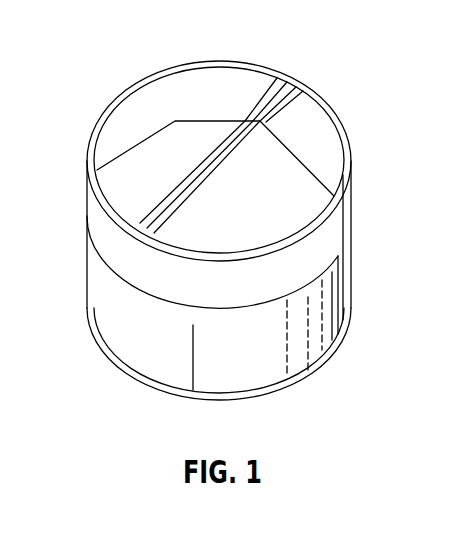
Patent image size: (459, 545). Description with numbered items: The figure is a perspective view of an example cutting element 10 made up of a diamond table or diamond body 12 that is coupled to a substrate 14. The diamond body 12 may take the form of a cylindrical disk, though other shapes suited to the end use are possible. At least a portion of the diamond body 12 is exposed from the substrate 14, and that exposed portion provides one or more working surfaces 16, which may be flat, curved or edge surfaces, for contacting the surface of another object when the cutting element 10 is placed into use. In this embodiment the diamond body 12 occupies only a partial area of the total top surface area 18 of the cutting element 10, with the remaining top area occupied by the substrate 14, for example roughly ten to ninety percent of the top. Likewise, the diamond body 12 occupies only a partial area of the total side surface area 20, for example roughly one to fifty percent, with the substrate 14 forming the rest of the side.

The cutting element 10 is at (356, 190).
The diamond body 12 is at (288, 168).
The substrate 14 is at (333, 308).
The working surfaces 16 is at (150, 257).
The total top surface area 18 is at (150, 85).
The total side surface area 20 is at (343, 218).